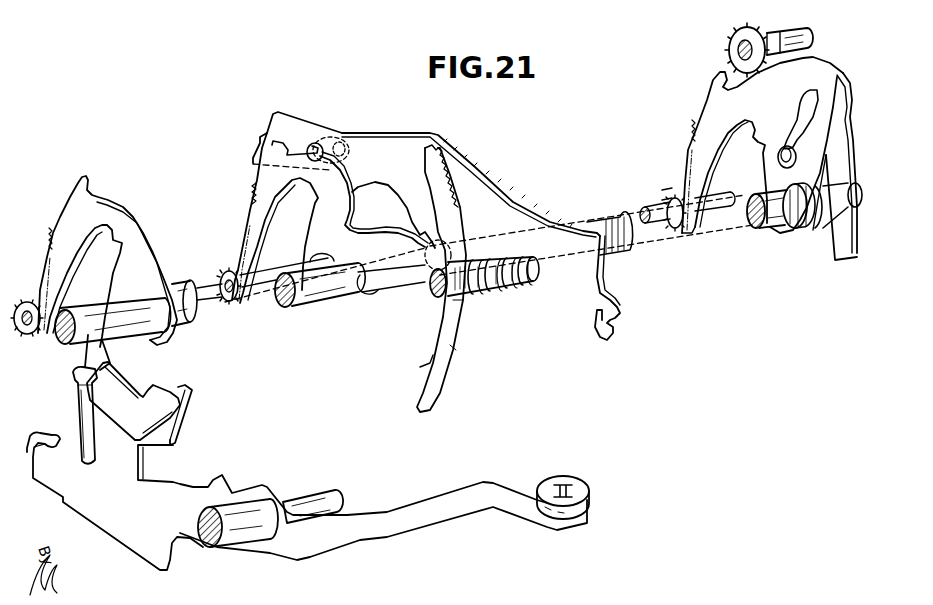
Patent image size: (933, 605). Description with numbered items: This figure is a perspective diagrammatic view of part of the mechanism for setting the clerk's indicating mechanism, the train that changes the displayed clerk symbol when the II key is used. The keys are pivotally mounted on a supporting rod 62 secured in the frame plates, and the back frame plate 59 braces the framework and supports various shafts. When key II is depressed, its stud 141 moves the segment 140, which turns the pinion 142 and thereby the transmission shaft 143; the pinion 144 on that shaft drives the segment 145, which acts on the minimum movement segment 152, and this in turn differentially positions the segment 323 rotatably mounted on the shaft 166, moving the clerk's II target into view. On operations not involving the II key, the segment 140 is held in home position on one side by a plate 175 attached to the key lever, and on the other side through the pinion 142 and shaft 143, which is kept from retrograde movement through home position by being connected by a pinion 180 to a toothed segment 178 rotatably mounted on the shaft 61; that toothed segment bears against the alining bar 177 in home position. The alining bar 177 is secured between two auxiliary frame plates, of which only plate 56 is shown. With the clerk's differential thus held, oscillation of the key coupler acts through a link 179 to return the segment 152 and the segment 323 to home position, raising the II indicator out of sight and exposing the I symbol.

The auxiliary frame plate 56 is at (568, 317).
The back frame plate 59 is at (267, 137).
The shaft 61 is at (133, 330).
The supporting rod 62 is at (288, 500).
The segment 140 is at (107, 210).
The stud 141 is at (73, 373).
The pinion 142 is at (30, 300).
The transmission shaft 143 is at (180, 283).
The pinion 144 is at (657, 200).
The segment 145 is at (712, 93).
The minimum movement segment 152 is at (835, 57).
The shaft 166 is at (800, 28).
The plate 175 is at (153, 380).
The alining bar 177 is at (478, 290).
The toothed segment 178 is at (440, 333).
The link 179 is at (847, 227).
The pinion 180 is at (217, 278).
The segment 323 is at (740, 32).